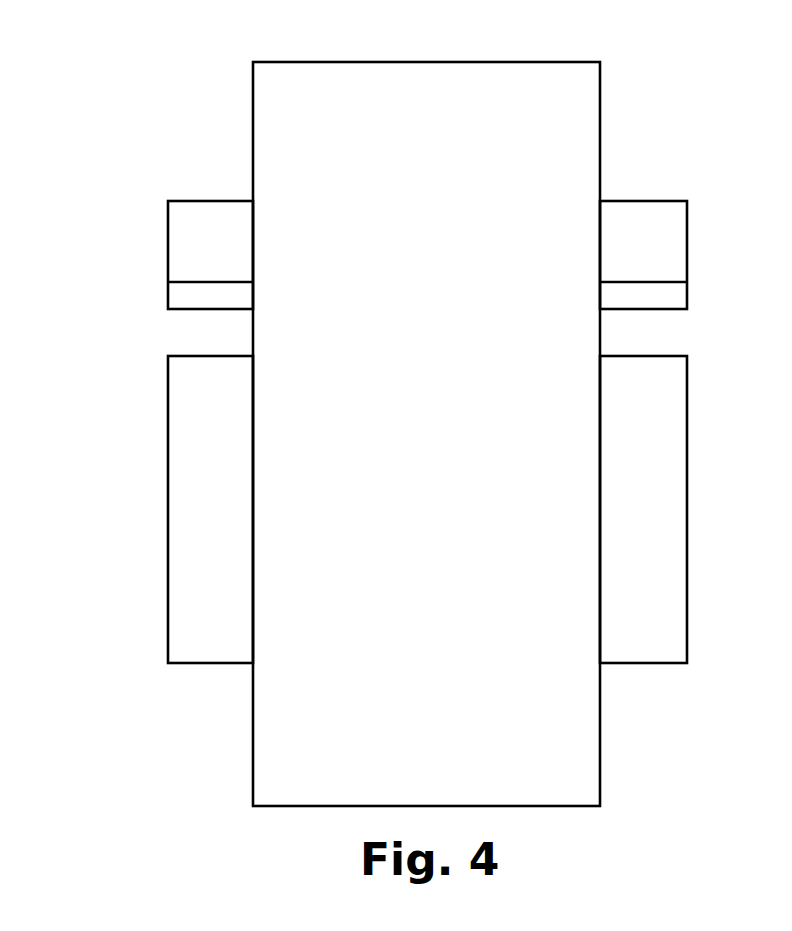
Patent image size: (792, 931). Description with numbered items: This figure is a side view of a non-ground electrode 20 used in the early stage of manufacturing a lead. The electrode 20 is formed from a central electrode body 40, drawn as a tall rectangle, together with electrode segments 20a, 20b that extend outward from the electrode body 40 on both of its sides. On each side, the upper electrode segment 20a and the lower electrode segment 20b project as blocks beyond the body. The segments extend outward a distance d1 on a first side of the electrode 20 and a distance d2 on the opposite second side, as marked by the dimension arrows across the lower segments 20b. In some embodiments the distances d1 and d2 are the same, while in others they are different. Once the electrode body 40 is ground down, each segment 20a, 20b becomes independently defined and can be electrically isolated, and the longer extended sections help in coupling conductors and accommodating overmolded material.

The non-ground electrode 20 is at (210, 55).
The electrode body 40 is at (577, 101).
The electrode segment 20a is at (168, 238).
The electrode segment 20b is at (168, 462).
The first-side extension distance d1 is at (687, 557).
The second-side extension distance d2 is at (253, 556).